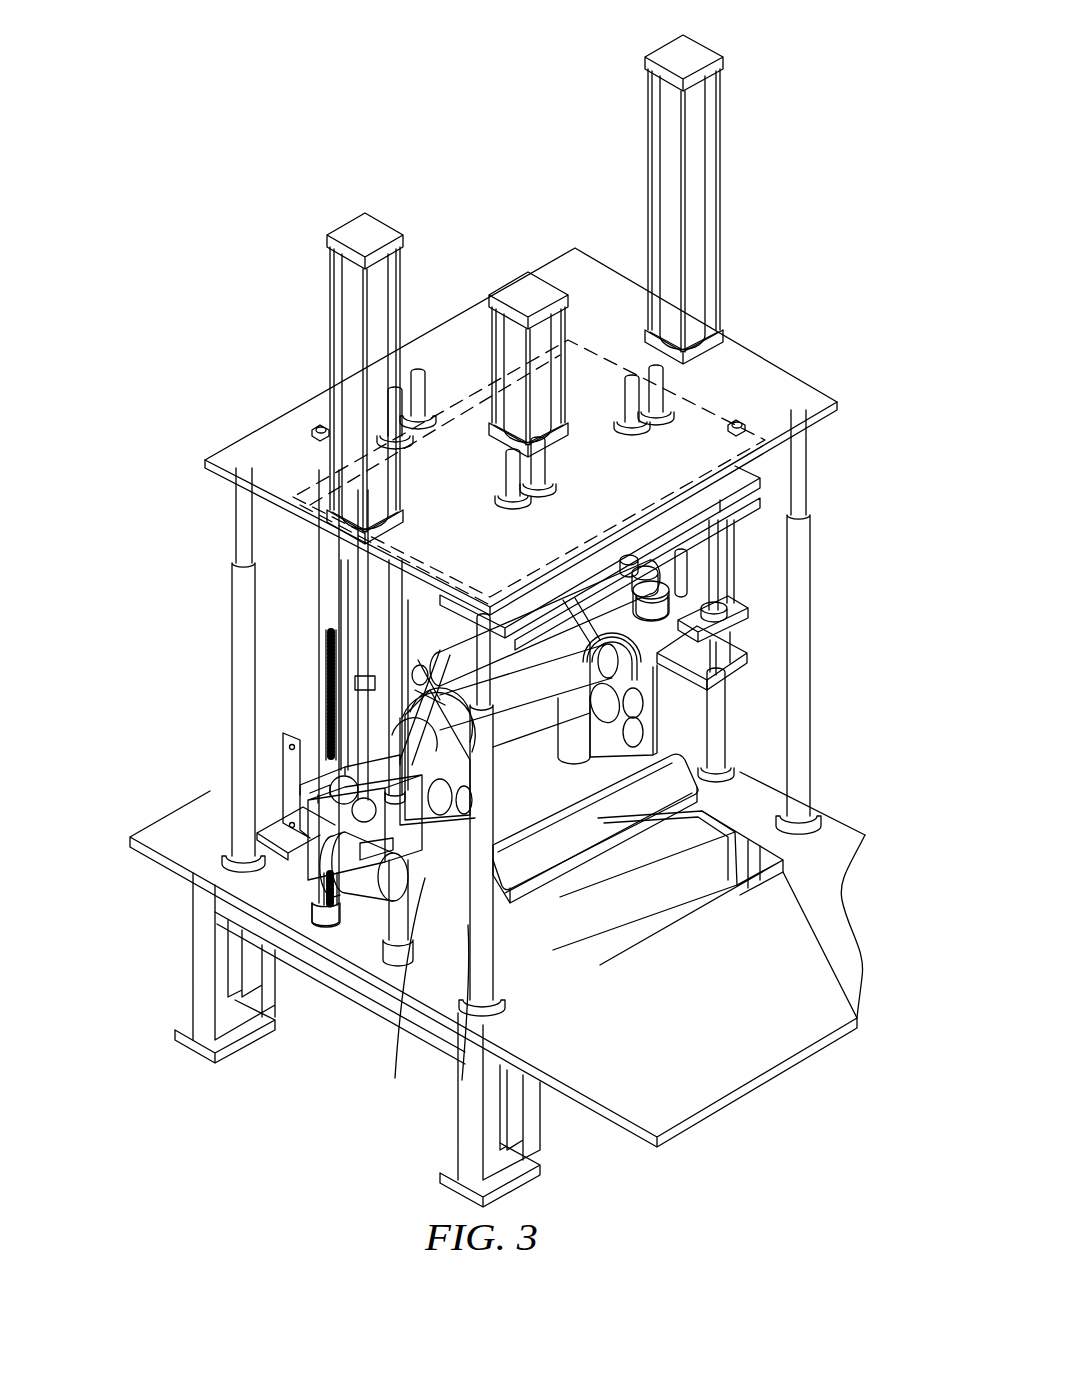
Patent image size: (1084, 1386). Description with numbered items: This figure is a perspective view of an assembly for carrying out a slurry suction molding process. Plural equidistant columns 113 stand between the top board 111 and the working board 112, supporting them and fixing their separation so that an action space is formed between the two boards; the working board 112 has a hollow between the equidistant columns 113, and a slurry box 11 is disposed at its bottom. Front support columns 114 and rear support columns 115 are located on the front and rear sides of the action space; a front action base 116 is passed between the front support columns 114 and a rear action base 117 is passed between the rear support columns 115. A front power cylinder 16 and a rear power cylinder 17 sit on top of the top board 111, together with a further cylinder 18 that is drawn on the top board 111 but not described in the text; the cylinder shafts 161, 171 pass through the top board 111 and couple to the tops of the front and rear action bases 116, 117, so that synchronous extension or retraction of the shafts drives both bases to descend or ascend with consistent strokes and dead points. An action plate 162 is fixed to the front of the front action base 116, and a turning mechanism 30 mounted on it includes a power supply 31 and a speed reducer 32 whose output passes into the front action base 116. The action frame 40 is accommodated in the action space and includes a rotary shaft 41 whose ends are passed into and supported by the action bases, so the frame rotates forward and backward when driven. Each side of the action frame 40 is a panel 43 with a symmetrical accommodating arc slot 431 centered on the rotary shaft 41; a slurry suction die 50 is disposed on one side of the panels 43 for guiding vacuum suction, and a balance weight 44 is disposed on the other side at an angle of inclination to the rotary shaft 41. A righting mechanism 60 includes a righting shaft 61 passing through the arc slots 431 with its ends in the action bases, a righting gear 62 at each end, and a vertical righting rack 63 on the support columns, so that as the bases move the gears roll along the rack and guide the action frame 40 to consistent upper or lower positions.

The slurry box 11 is at (545, 930).
The top board 111 is at (738, 374).
The working board 112 is at (820, 848).
The equidistant columns 113 is at (243, 628).
The front support columns 114 is at (330, 605).
The rear support columns 115 is at (720, 688).
The front action base 116 is at (445, 960).
The rear action base 117 is at (703, 653).
The front power cylinder 16 is at (355, 401).
The rear power cylinder 17 is at (693, 172).
The cylinder shaft 171 is at (683, 565).
The pneumatic cylinder 18 is at (515, 388).
The turning mechanism 30 is at (280, 853).
The power supply 31 is at (323, 852).
The speed reducer 32 is at (277, 853).
The action frame 40 is at (555, 797).
The rotary shaft 41 is at (597, 667).
The panel 43 is at (425, 697).
The accommodating arc slot 431 is at (405, 718).
The balance weight 44 is at (453, 642).
The slurry suction die 50 is at (555, 878).
The righting mechanism 60 is at (285, 795).
The righting shaft 61 is at (735, 440).
The righting gear 62 is at (680, 597).
The righting rack 63 is at (330, 655).
The cylinder shaft 161 is at (360, 684).
The action plate 162 is at (293, 823).